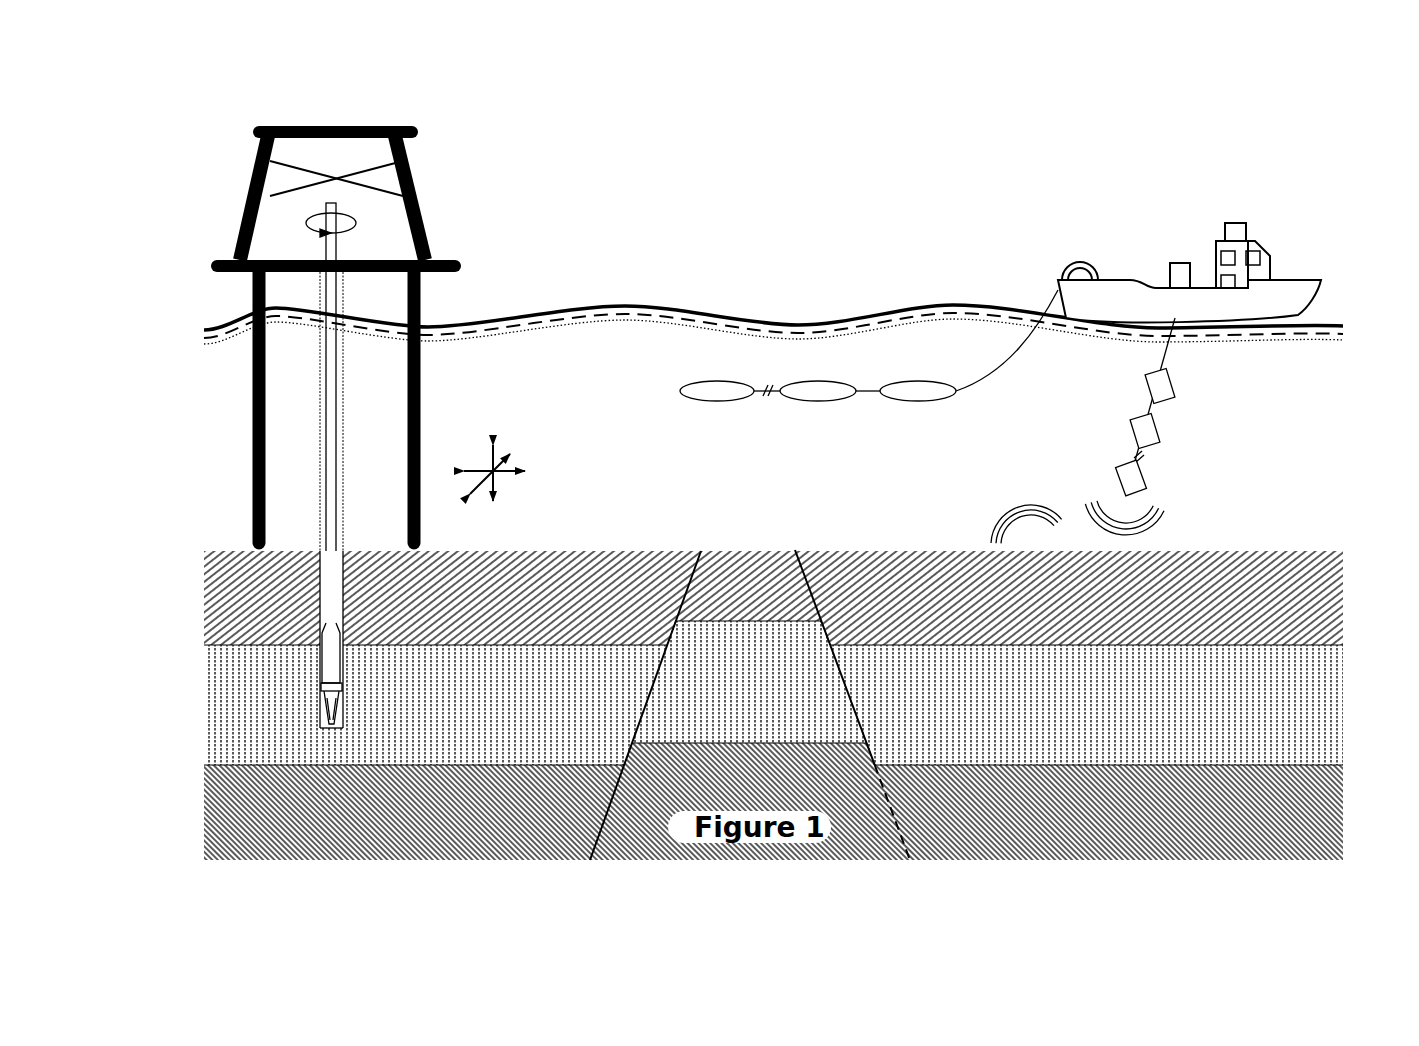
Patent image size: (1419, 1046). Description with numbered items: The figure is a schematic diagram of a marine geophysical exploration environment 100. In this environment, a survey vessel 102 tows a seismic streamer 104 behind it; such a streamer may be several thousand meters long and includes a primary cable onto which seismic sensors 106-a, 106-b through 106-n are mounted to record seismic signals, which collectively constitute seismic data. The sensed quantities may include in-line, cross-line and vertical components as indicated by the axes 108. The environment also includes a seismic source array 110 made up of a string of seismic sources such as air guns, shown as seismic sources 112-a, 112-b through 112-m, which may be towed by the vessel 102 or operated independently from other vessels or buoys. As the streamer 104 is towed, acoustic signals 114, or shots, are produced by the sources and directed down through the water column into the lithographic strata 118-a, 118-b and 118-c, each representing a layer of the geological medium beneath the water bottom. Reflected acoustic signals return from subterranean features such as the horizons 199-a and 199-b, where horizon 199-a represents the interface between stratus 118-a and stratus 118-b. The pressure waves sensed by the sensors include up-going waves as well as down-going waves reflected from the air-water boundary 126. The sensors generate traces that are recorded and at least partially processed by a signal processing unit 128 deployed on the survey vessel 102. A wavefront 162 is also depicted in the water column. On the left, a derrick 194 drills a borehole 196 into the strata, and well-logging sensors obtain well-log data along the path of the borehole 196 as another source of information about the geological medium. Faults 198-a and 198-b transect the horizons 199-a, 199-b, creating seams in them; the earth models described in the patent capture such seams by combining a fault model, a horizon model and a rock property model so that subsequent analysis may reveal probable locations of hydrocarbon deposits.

The marine geophysical exploration environment 100 is at (652, 90).
The survey vessel 102 is at (1305, 248).
The seismic streamer 104 is at (1034, 350).
The seismic sensor 106-a is at (930, 405).
The seismic sensor 106-b is at (818, 405).
The seismic sensor 106-n is at (708, 408).
The axes 108 is at (510, 402).
The seismic source array 110 is at (1190, 343).
The seismic source 112-a is at (1172, 385).
The seismic source 112-b is at (1160, 420).
The seismic source 112-m is at (1150, 468).
The acoustic signals 114 is at (1090, 465).
The lithographic stratus 118-a is at (1210, 608).
The lithographic stratus 118-b is at (1210, 728).
The lithographic stratus 118-c is at (1210, 822).
The air-water boundary 126 is at (722, 300).
The signal processing unit 128 is at (1171, 246).
The seismic wavefront 162 is at (1005, 485).
The derrick 194 is at (236, 180).
The borehole 196 is at (304, 678).
The fault 198-a is at (640, 664).
The fault 198-b is at (812, 642).
The horizon 199-a is at (1018, 630).
The horizon 199-b is at (1020, 752).